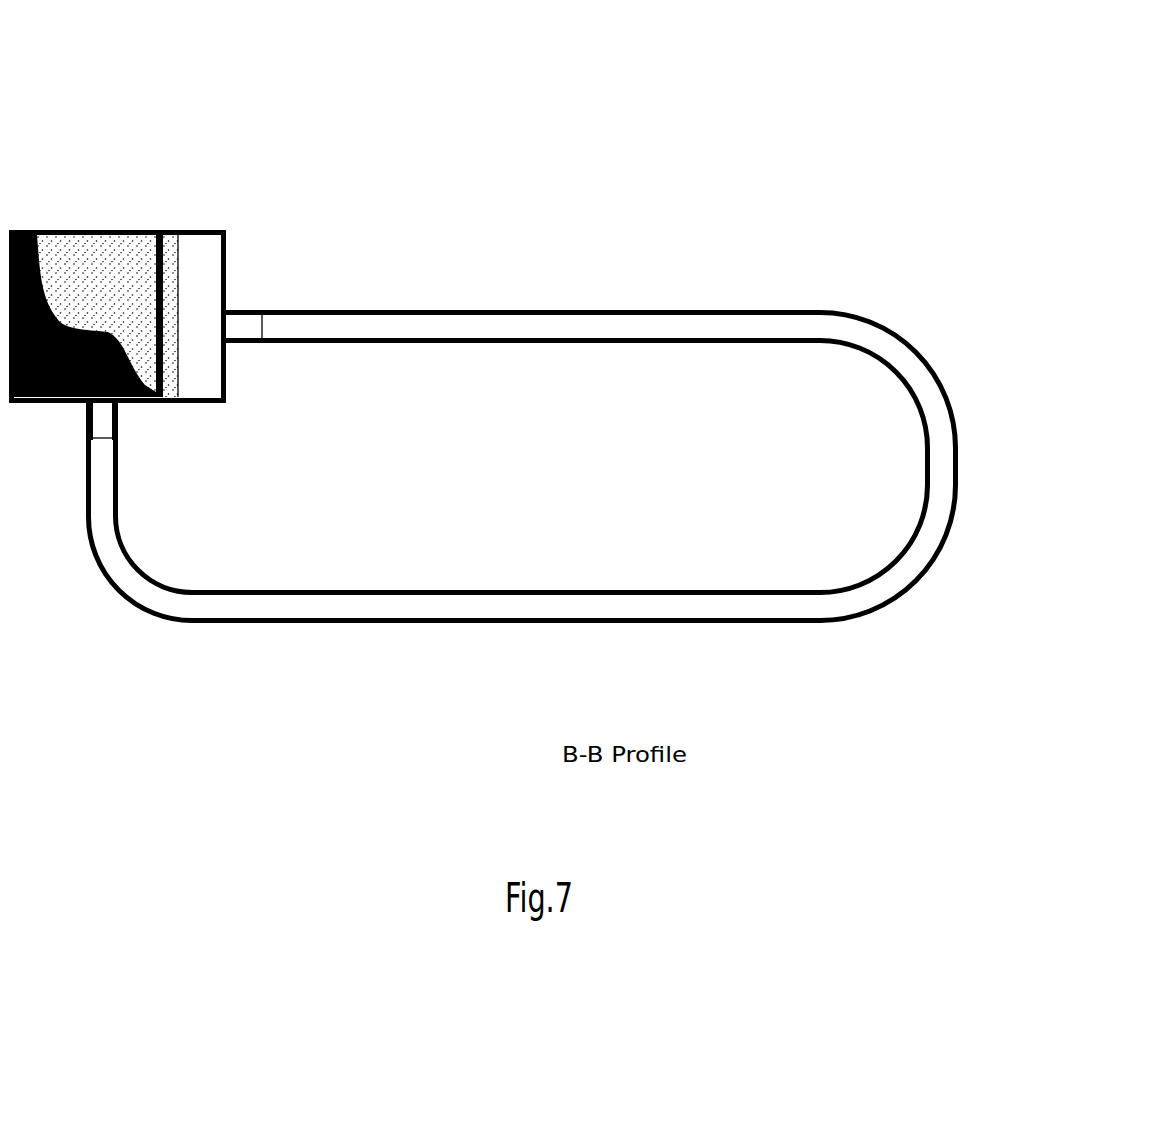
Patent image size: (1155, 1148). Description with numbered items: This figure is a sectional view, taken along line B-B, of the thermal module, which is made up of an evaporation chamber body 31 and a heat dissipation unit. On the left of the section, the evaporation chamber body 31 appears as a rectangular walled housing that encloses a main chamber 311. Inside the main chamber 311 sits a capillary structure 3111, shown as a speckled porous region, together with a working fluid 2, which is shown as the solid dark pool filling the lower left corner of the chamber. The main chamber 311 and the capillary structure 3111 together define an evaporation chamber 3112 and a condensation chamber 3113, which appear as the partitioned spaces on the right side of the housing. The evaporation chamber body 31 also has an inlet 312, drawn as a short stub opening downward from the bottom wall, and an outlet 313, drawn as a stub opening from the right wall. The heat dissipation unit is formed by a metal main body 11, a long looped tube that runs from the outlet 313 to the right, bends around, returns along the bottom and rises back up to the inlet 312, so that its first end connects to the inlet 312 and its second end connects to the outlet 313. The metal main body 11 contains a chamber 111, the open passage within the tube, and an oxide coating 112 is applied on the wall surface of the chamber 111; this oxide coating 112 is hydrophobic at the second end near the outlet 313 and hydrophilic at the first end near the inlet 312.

The metal main body 11 is at (577, 407).
The chamber 111 is at (683, 325).
The oxide coating 112 is at (867, 320).
The working fluid 2 is at (25, 233).
The evaporation chamber body 31 is at (234, 290).
The main chamber 311 is at (308, 269).
The capillary structure 3111 is at (53, 270).
The evaporation chamber 3112 is at (212, 257).
The condensation chamber 3113 is at (168, 233).
The inlet 312 is at (98, 412).
The outlet 313 is at (243, 323).